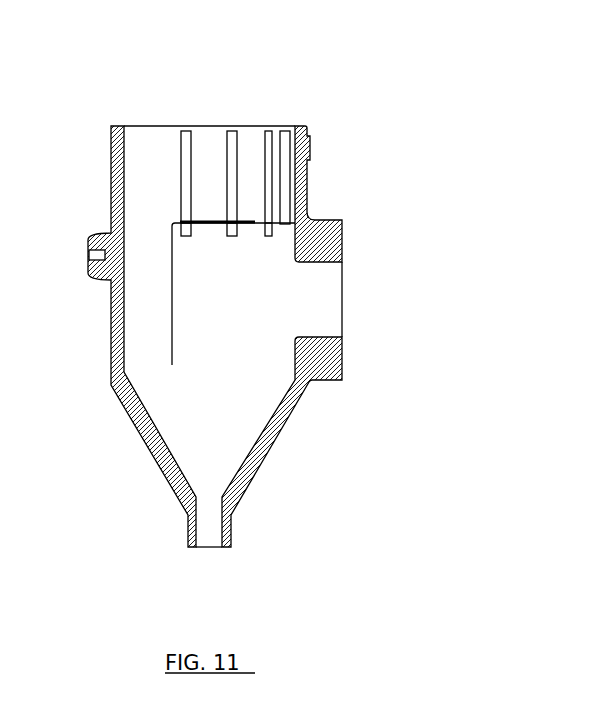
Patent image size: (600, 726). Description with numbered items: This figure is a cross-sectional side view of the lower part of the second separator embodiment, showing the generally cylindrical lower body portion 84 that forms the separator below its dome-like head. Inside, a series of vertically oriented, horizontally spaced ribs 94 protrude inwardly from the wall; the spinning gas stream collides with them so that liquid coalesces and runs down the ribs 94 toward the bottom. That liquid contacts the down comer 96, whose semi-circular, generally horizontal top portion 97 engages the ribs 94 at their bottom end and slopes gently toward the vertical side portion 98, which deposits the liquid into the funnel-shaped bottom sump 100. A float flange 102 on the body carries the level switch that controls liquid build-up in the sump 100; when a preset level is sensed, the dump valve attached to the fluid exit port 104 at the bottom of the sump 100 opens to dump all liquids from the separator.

The lower body portion 84 is at (80, 307).
The ribs 94 is at (193, 146).
The down comer 96 is at (170, 318).
The top portion 97 is at (255, 218).
The vertical side portion 98 is at (170, 350).
The bottom sump 100 is at (218, 405).
The float flange 102 is at (344, 360).
The fluid exit port 104 is at (200, 548).